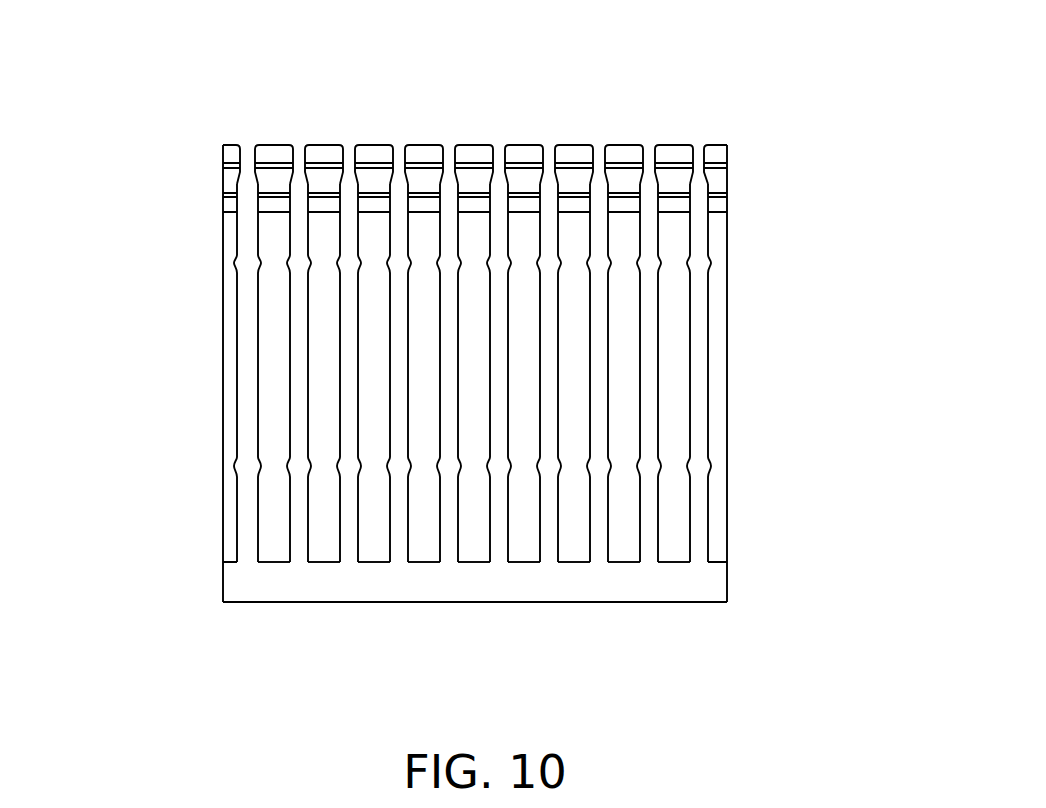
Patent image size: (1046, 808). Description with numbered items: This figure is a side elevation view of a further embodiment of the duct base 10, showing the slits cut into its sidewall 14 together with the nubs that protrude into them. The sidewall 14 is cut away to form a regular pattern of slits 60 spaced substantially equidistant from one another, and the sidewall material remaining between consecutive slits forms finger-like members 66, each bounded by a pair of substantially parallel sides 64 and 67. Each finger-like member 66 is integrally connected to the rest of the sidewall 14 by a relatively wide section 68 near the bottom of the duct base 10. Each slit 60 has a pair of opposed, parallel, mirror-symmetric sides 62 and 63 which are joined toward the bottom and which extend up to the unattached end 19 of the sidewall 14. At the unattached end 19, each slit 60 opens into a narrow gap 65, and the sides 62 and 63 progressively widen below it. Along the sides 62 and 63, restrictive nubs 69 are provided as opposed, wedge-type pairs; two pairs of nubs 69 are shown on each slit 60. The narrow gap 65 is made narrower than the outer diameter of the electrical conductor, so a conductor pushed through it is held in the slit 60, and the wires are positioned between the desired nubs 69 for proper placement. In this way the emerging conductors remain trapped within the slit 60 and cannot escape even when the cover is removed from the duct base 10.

The duct base 10 is at (481, 324).
The sidewall 14 is at (223, 458).
The unattached distal end 19 is at (672, 155).
The slit 60 is at (303, 505).
The side of slit 62 is at (712, 402).
The side of slit 63 is at (692, 432).
The side of finger-like member 64 is at (310, 532).
The narrow gap 65 is at (247, 177).
The finger-like member 66 is at (568, 243).
The side of finger-like member 67 is at (340, 540).
The relatively wide section 68 is at (695, 580).
The restrictive nub 69 is at (310, 463).